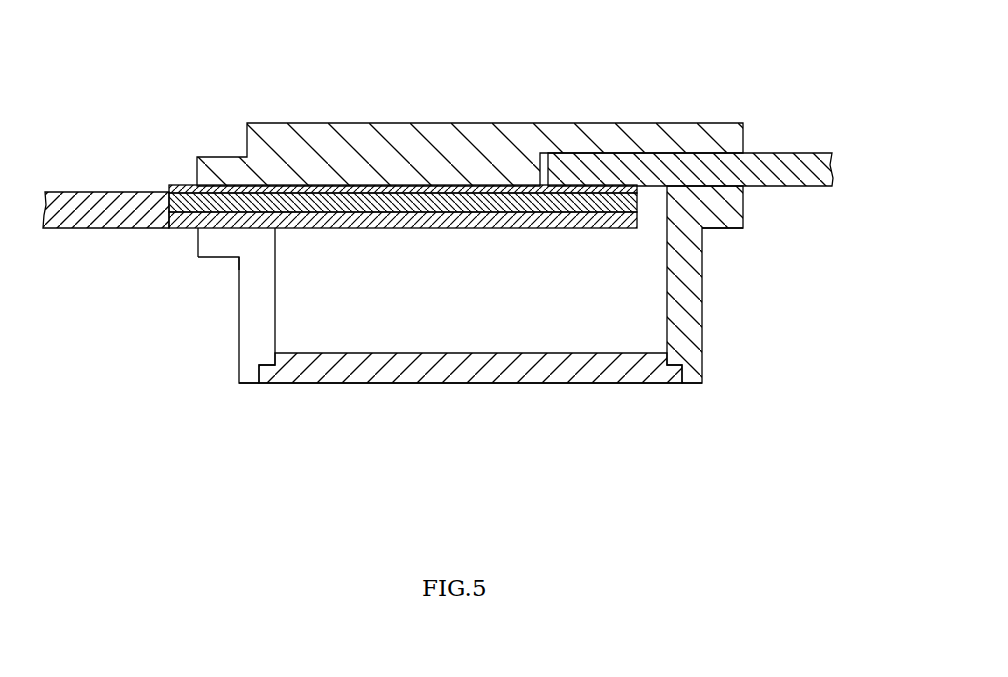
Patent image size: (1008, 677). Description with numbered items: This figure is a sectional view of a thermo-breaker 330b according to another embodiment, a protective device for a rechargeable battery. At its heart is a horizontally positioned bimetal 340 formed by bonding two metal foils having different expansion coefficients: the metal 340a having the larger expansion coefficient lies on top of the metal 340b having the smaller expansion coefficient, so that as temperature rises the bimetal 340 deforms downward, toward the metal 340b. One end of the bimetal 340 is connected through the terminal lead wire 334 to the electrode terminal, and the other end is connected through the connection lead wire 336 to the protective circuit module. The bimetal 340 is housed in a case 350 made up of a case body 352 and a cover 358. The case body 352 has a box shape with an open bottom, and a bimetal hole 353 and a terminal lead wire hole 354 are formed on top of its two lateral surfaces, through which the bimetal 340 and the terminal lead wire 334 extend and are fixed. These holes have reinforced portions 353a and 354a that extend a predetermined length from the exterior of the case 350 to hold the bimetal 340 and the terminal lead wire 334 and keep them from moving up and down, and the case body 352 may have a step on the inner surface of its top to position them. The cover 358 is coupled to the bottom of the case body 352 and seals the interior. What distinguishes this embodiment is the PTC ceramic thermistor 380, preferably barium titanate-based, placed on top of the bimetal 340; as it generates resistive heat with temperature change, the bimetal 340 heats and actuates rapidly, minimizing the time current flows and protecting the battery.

The thermo-breaker 330b is at (703, 400).
The terminal lead wire 334 is at (780, 155).
The connection lead wire 336 is at (82, 194).
The bimetal 340 is at (403, 116).
The metal having a larger expansion coefficient 340a is at (393, 198).
The metal having a smaller expansion coefficient 340b is at (286, 214).
The case 350 is at (473, 328).
The case body 352 is at (176, 318).
The bimetal hole 353 is at (200, 228).
The reinforced portion 353a is at (218, 253).
The terminal lead wire hole 354 is at (769, 284).
The reinforced portion 354a is at (730, 230).
The cover 358 is at (290, 376).
The PTC ceramic thermistor 380 is at (500, 190).